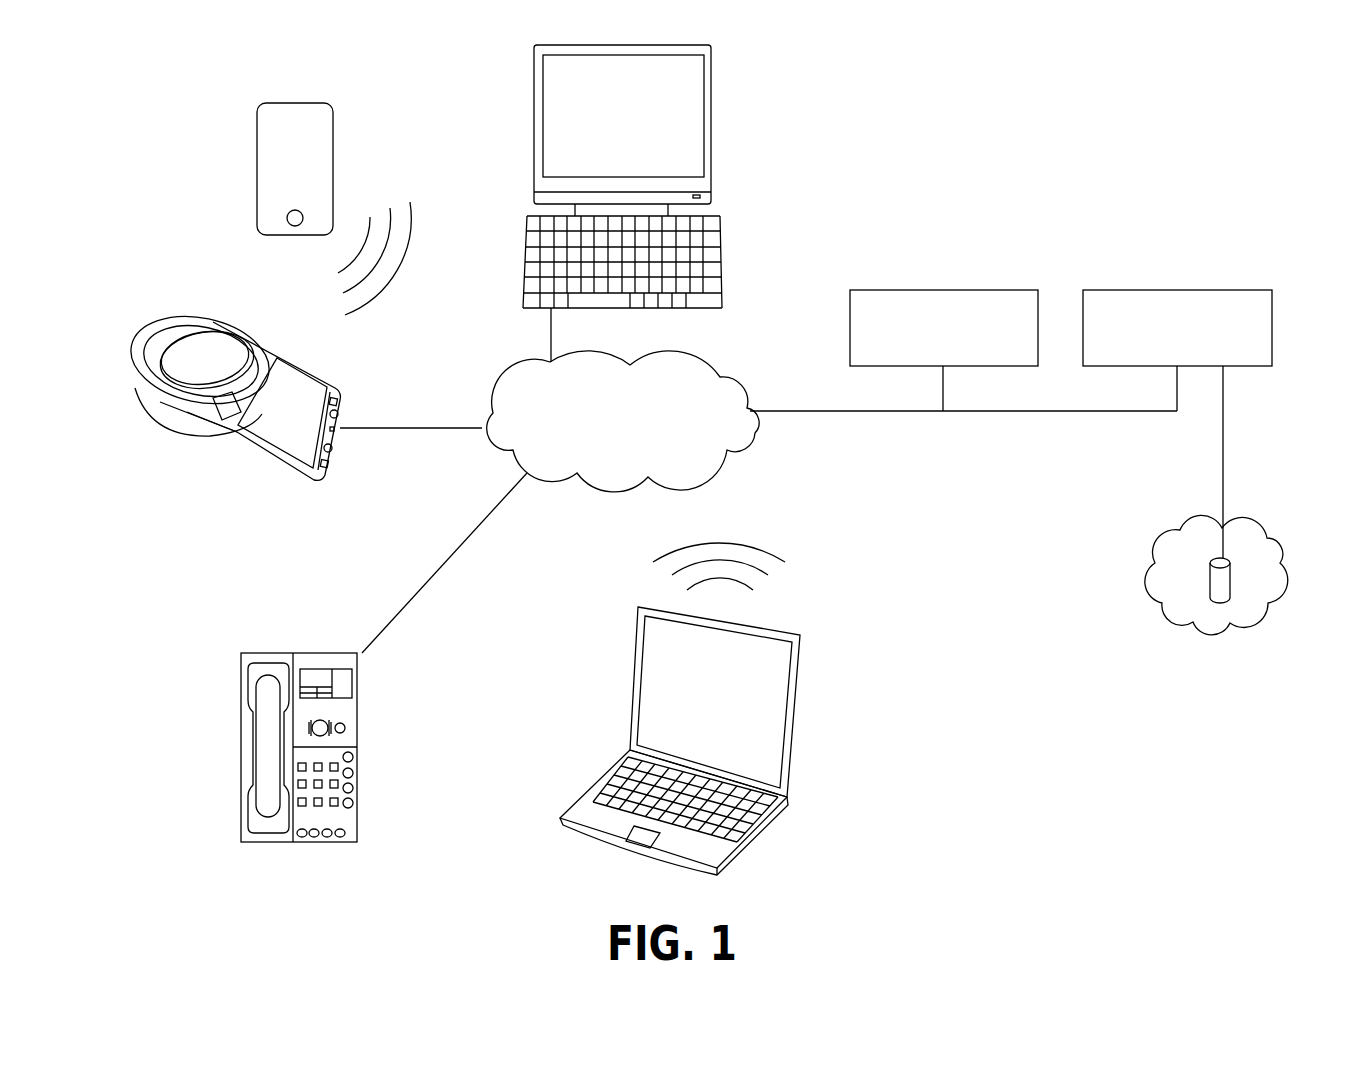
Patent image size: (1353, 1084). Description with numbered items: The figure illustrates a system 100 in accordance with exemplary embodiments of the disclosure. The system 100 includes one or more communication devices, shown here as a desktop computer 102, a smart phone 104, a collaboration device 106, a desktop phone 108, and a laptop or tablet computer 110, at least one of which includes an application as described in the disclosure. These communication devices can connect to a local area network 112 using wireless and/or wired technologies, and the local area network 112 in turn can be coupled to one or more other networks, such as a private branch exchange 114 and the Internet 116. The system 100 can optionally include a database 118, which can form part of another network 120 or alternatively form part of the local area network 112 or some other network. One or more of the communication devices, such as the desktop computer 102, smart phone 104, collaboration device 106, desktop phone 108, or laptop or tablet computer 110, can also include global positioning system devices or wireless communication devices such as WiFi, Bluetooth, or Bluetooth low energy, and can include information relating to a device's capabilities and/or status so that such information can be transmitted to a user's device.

The system 100 is at (1015, 84).
The desktop computer 102 is at (711, 64).
The smart phone 104 is at (258, 130).
The collaboration device 106 is at (155, 323).
The desktop phone 108 is at (242, 672).
The laptop or tablet computer 110 is at (795, 687).
The local area network 112 is at (755, 437).
The private branch exchange 114 is at (952, 290).
The Internet 116 is at (1175, 290).
The database 118 is at (1220, 561).
The another network 120 is at (1280, 563).